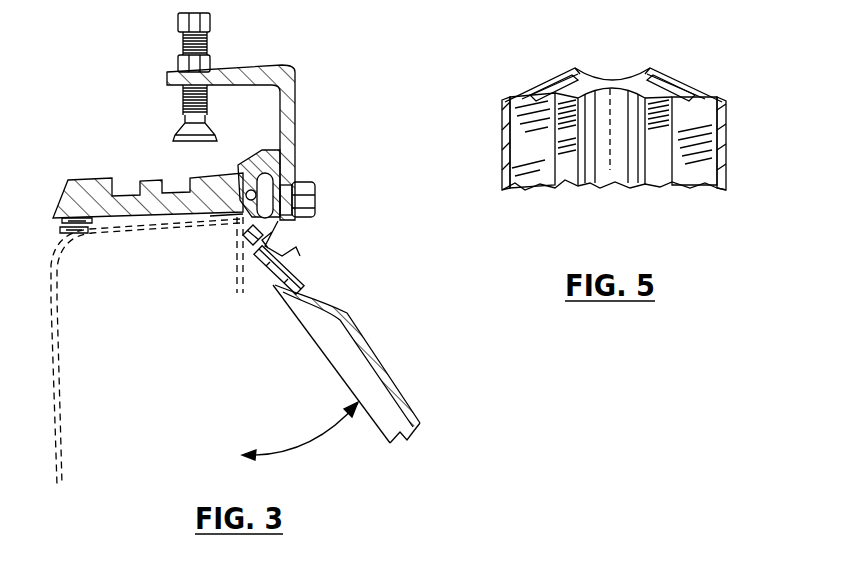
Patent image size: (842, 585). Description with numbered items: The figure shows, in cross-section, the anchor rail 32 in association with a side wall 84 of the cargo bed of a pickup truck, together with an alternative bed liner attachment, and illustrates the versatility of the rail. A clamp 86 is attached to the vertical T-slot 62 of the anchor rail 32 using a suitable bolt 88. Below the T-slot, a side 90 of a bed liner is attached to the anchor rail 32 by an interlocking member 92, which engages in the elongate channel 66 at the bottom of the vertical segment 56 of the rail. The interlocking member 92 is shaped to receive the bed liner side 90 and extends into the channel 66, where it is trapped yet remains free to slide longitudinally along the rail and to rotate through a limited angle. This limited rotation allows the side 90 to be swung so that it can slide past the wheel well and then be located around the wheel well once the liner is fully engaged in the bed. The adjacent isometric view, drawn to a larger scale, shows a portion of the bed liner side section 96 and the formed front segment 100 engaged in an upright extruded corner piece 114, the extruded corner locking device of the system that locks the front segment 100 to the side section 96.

In FIG. 3, the anchor rail 32 is at (87, 178).
In FIG. 3, the vertical segment 56 is at (285, 240).
In FIG. 3, the vertical T-slot 62 is at (241, 200).
In FIG. 3, the elongate channel 66 is at (253, 240).
In FIG. 3, the side wall 84 is at (57, 383).
In FIG. 3, the clamp 86 is at (299, 46).
In FIG. 3, the bolt 88 is at (315, 198).
In FIG. 3, the side of bed liner 90 is at (393, 378).
In FIG. 3, the interlocking member 92 is at (295, 265).
In FIG. 5, the side section 96 is at (532, 148).
In FIG. 5, the front segment 100 is at (707, 145).
In FIG. 5, the upright extruded corner piece 114 is at (610, 150).